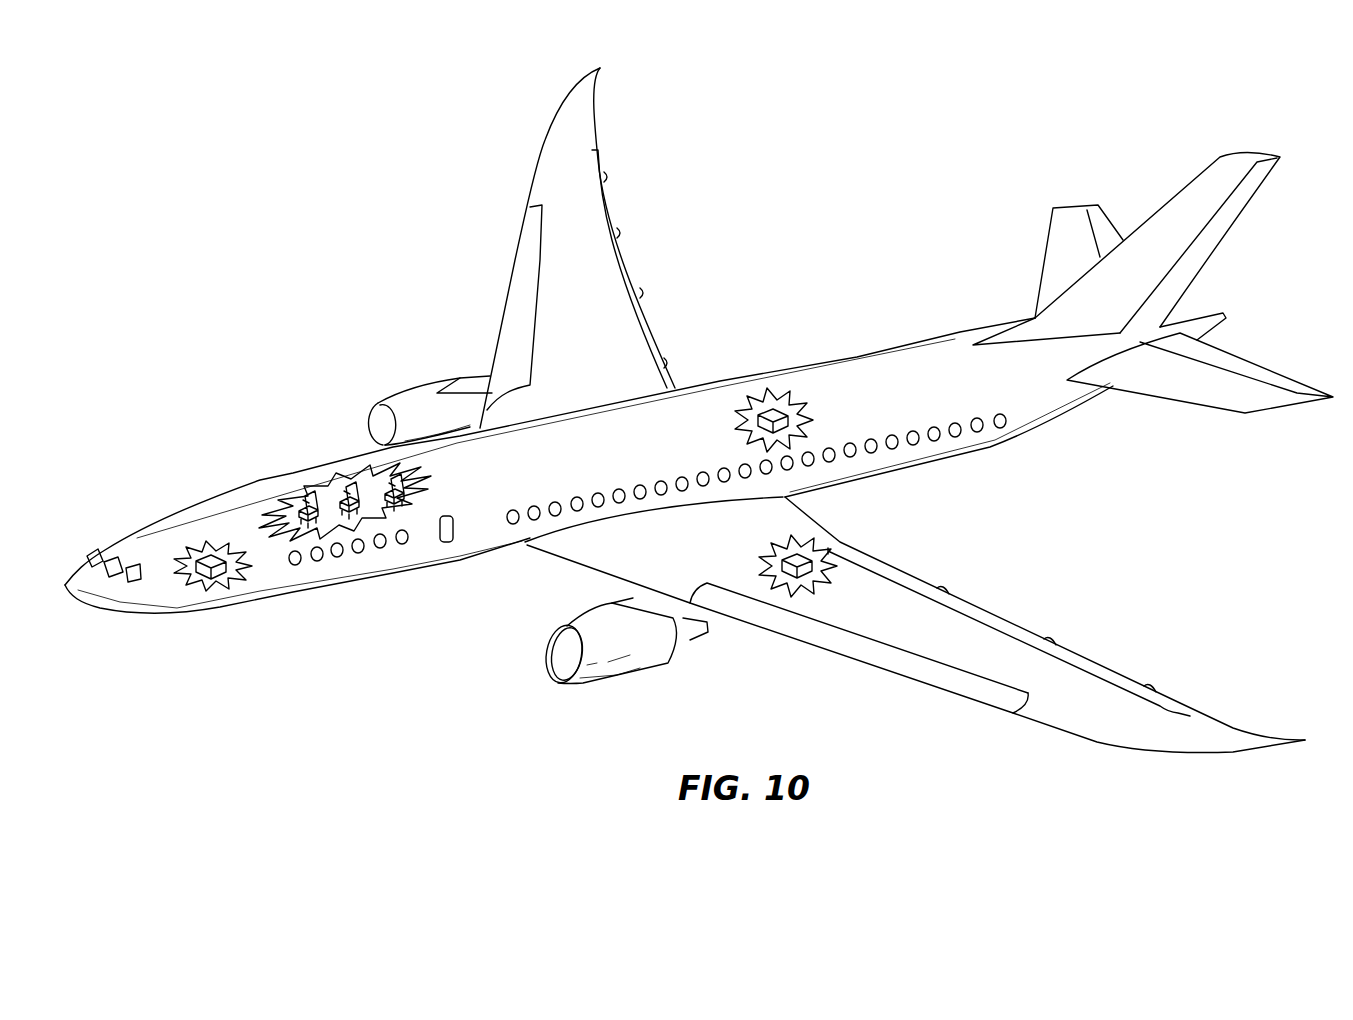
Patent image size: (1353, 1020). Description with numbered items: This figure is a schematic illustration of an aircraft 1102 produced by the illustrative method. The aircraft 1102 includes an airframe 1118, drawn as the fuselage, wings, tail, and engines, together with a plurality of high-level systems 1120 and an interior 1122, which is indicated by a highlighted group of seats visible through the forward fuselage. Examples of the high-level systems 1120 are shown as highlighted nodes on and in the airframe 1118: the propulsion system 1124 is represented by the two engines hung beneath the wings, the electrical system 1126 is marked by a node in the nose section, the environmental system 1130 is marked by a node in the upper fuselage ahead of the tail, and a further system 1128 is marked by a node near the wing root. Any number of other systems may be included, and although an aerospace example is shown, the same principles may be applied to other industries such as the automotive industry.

The aircraft 1102 is at (301, 216).
The high-level systems 1120 is at (789, 210).
The airframe 1118 is at (290, 458).
The interior 1122 is at (330, 525).
The propulsion system 1124 is at (418, 396).
The electrical system 1126 is at (208, 555).
The sensor node 1128 is at (828, 572).
The environmental system 1130 is at (790, 423).